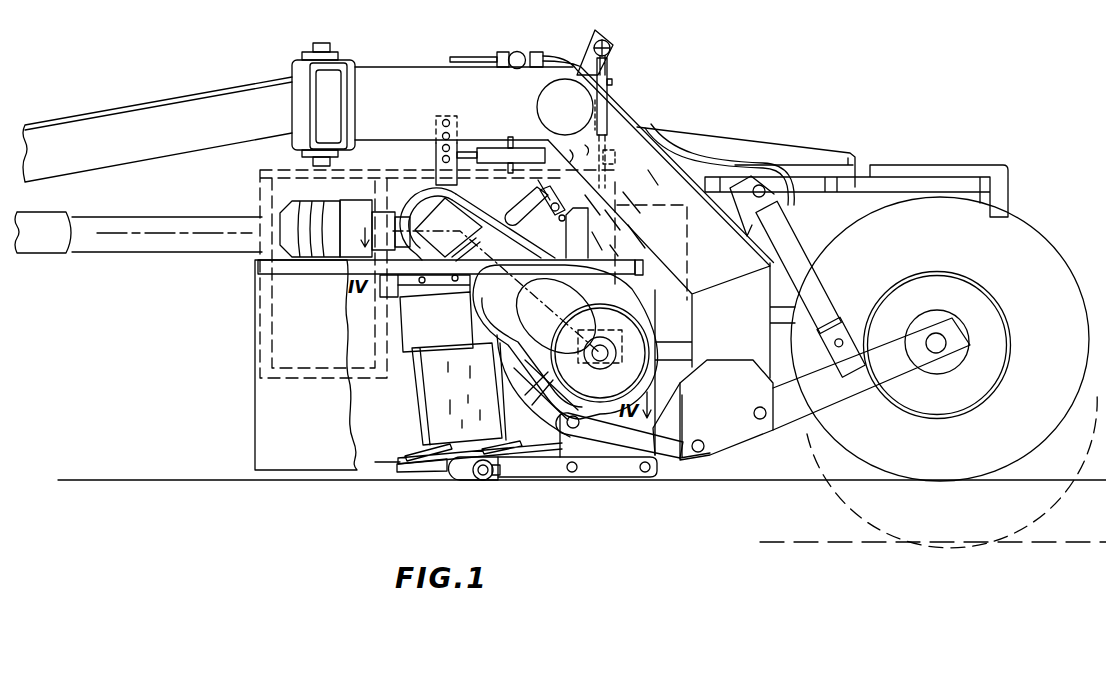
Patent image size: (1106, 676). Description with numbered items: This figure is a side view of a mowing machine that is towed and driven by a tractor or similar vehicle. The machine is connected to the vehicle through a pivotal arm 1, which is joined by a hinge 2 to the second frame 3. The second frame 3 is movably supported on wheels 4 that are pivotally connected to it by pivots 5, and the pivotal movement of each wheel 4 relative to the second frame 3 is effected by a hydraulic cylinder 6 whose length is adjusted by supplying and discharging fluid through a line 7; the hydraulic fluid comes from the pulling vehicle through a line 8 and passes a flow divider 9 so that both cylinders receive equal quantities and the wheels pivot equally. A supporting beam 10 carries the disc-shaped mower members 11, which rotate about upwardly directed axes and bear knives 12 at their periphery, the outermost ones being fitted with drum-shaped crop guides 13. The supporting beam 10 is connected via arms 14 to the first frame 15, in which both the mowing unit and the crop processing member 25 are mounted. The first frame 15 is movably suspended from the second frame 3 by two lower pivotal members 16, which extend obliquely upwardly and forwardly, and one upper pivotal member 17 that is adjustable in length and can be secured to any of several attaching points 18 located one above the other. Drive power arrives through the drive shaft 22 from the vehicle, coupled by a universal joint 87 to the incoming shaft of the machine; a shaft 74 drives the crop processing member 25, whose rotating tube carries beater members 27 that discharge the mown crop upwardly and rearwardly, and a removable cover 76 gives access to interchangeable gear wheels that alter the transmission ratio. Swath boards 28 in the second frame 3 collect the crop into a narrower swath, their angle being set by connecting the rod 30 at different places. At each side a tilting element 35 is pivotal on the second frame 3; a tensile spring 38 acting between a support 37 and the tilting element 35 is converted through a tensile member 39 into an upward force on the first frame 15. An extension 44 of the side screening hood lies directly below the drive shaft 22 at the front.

The pivotal arm 1 is at (110, 120).
The hinge 2 is at (322, 100).
The second frame 3 is at (658, 158).
The wheels 4 is at (1025, 232).
The pivots 5 is at (760, 408).
The hydraulic cylinder 6 is at (818, 297).
The line 7 is at (720, 163).
The line 8 is at (460, 56).
The flow divider 9 is at (512, 50).
The supporting beam 10 is at (251, 266).
The mower members 11 is at (407, 444).
The knives 12 is at (382, 464).
The drum-shaped crop guides 13 is at (430, 395).
The arms 14 is at (603, 480).
The first frame 15 is at (631, 458).
The lower pivotal members 16 is at (672, 437).
The upper pivotal member 17 is at (487, 148).
The attaching points 18 is at (440, 133).
The drive shaft 22 is at (135, 242).
The crop processing member 25 is at (462, 222).
The beater members 27 is at (556, 380).
The swath boards 28 is at (935, 165).
The rod 30 is at (790, 150).
The tilting element 35 is at (610, 80).
The support 37 is at (578, 58).
The tensile spring 38 is at (612, 48).
The tensile member 39 is at (612, 128).
The extension 44 is at (262, 380).
The shaft 74 is at (576, 346).
The removable cover 76 is at (490, 300).
The universal joint 87 is at (342, 237).